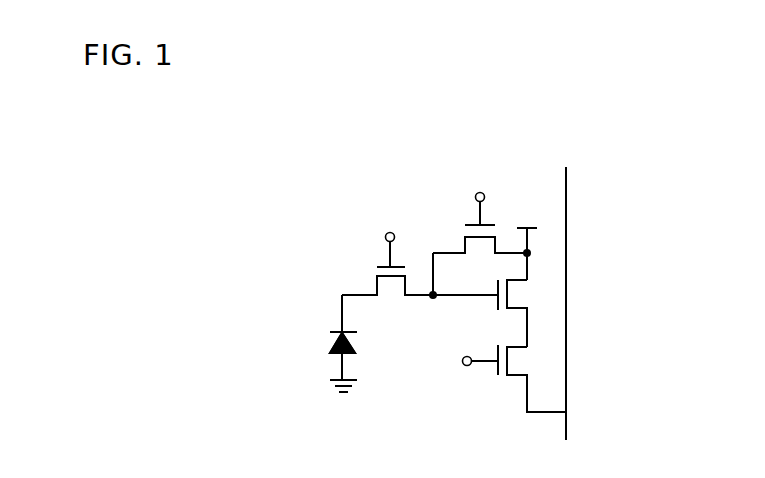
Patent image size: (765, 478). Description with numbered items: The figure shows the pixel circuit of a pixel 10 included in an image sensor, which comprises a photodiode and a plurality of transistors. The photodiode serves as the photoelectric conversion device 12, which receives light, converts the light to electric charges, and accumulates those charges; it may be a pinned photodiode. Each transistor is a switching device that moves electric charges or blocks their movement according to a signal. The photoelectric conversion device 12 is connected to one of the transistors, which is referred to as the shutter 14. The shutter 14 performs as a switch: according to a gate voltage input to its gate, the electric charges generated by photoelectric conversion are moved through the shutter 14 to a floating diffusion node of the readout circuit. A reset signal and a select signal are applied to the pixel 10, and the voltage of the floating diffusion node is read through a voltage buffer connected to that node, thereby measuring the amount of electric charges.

The pixel 10 is at (518, 134).
The photoelectric conversion device 12 is at (330, 343).
The shutter 14 is at (383, 265).